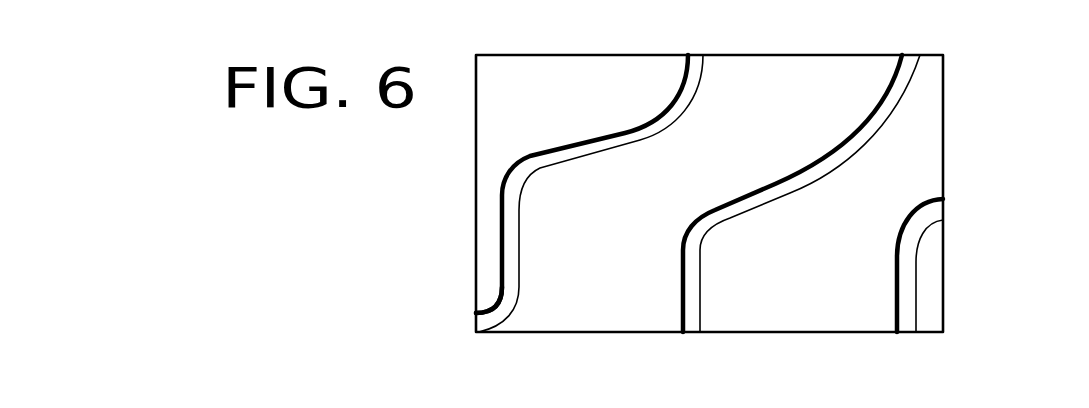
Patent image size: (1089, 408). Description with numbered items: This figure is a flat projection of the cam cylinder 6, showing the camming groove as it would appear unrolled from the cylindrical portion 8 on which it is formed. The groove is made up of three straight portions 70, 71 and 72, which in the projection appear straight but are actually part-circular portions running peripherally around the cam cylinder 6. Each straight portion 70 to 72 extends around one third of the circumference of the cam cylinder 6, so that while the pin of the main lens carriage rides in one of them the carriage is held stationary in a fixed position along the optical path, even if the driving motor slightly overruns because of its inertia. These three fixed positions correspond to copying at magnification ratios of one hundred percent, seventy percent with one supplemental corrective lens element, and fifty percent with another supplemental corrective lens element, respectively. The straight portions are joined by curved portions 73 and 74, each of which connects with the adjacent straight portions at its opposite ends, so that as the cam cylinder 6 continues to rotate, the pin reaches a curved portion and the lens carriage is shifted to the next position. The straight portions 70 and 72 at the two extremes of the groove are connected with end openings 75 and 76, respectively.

The cam cylinder 6 is at (802, 347).
The cylindrical portion 8 is at (631, 303).
The straight portion 70 is at (507, 259).
The straight portion 71 is at (700, 297).
The straight portion 72 is at (905, 283).
The curved portion 73 is at (630, 140).
The curved portion 74 is at (817, 172).
The end opening 75 is at (477, 315).
The end opening 76 is at (946, 212).